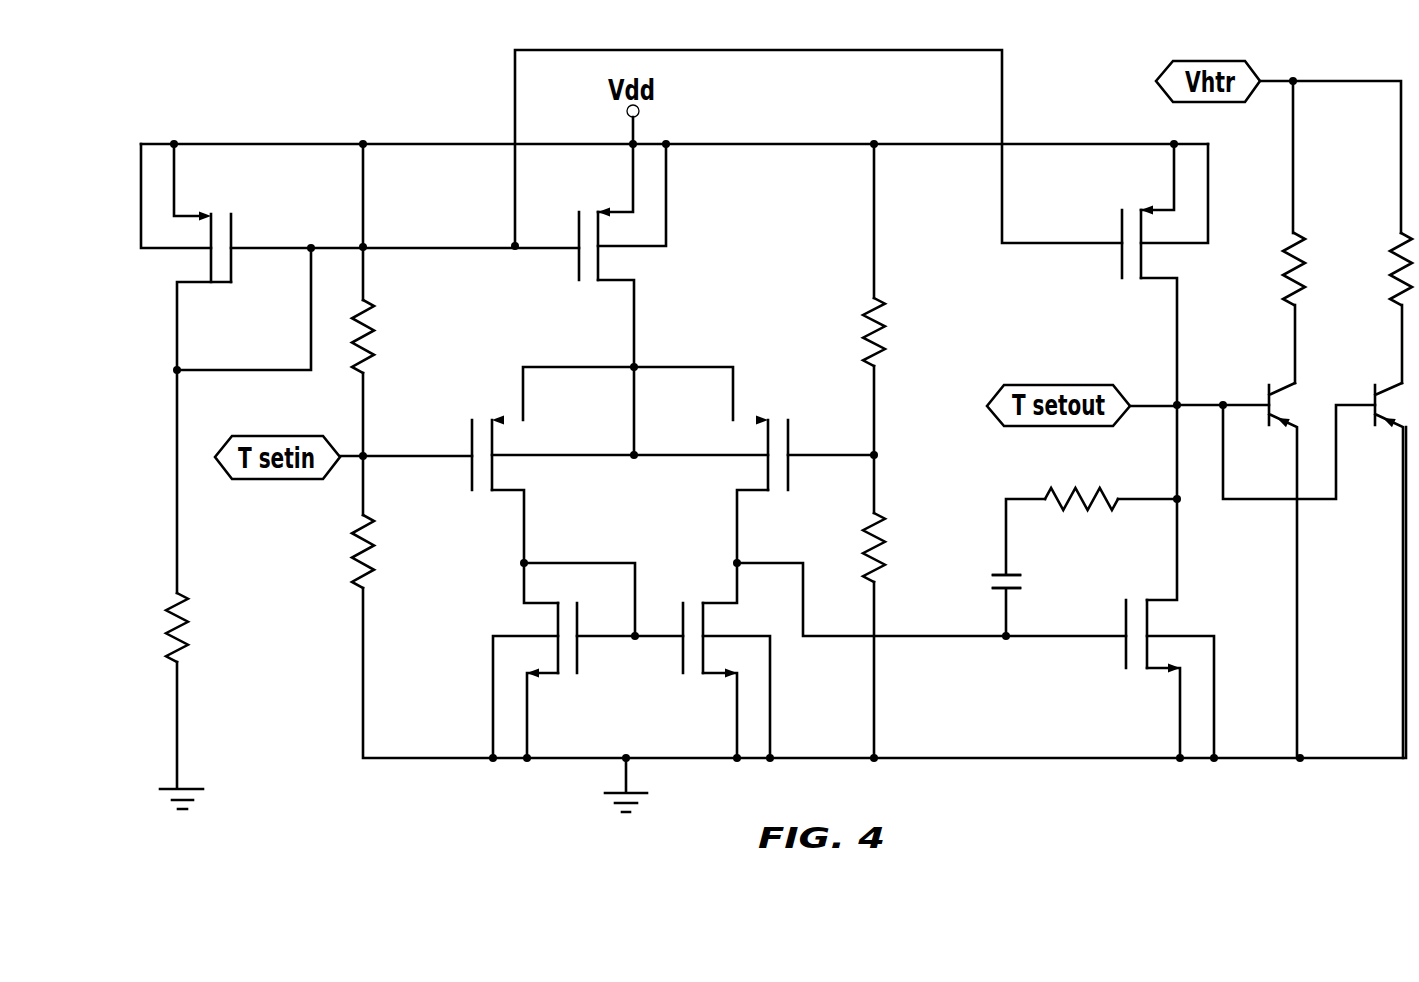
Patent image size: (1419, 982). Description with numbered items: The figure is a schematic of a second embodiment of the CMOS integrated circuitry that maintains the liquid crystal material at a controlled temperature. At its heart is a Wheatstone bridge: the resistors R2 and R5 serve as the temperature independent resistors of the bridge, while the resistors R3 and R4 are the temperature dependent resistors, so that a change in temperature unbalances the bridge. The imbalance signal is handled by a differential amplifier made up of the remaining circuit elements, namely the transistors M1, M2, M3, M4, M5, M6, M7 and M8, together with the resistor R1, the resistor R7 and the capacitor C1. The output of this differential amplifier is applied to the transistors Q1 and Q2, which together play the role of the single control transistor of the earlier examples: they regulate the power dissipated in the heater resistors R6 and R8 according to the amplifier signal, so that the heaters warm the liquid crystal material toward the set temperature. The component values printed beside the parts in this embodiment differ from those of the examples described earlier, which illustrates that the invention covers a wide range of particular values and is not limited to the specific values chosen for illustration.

The transistor M1 is at (697, 652).
The transistor M2 is at (557, 652).
The transistor M3 is at (474, 470).
The transistor M4 is at (787, 468).
The transistor M5 is at (575, 259).
The transistor M6 is at (223, 242).
The transistor M7 is at (1115, 251).
The transistor M8 is at (1127, 650).
The resistor R1 is at (195, 627).
The temperature independent resistor R2 is at (394, 336).
The temperature dependent resistor R3 is at (334, 551).
The temperature dependent resistor R4 is at (883, 332).
The temperature independent resistor R5 is at (905, 545).
The heater resistor R6 is at (1269, 269).
The resistor R7 is at (1084, 500).
The heater resistor R8 is at (1373, 269).
The capacitor C1 is at (977, 597).
The transistor Q1 is at (1272, 556).
The transistor Q2 is at (1382, 556).